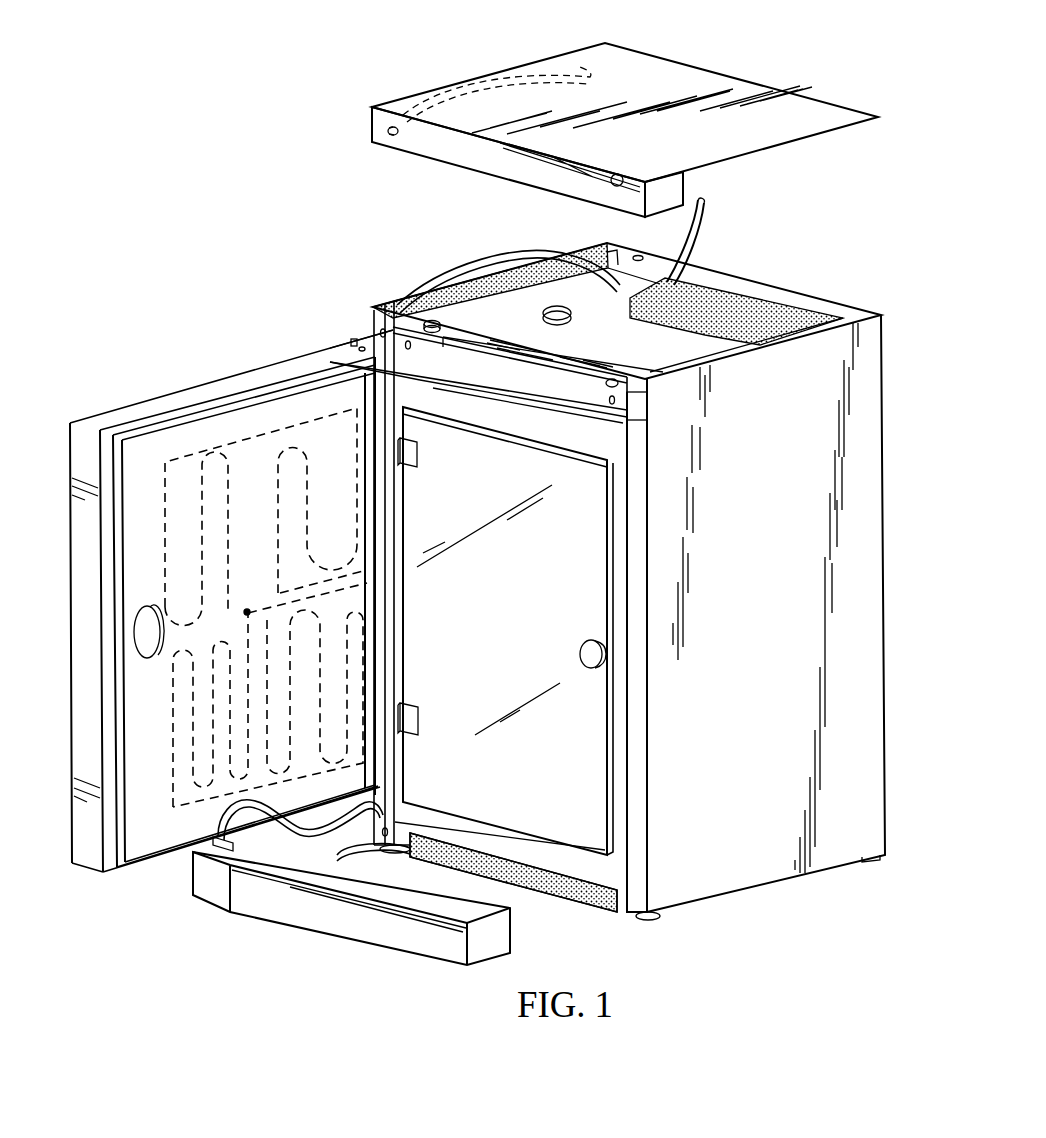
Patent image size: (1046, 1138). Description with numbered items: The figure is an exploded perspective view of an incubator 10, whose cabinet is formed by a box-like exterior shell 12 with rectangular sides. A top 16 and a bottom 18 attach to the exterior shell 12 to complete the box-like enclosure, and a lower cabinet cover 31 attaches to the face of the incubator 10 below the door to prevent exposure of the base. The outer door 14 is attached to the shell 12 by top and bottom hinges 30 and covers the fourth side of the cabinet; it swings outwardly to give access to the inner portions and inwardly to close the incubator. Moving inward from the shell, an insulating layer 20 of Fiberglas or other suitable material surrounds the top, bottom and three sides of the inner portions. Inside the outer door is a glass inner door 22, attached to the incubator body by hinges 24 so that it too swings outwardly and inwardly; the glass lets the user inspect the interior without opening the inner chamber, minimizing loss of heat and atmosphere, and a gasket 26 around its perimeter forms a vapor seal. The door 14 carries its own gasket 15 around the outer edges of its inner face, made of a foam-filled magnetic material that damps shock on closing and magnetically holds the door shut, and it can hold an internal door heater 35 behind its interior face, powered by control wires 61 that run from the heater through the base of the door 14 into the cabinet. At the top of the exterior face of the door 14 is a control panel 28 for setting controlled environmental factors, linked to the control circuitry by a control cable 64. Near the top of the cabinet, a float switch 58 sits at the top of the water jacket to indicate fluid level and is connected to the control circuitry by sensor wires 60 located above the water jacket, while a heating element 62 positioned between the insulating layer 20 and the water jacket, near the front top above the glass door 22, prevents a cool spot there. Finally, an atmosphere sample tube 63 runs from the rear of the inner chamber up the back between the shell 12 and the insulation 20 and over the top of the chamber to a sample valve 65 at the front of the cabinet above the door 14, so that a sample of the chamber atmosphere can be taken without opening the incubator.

The incubator 10 is at (312, 996).
The exterior shell 12 is at (885, 820).
The door 14 is at (83, 462).
The gasket 15 is at (143, 853).
The top 16 is at (802, 100).
The bottom 18 is at (522, 888).
The insulating layer 20 is at (560, 277).
The inner door 22 is at (587, 760).
The hinges 24 is at (417, 453).
The gasket 26 is at (613, 690).
The control panel 28 is at (287, 363).
The hinges 30 is at (352, 345).
The lower cabinet cover 31 is at (447, 962).
The internal door heater 35 is at (173, 703).
The float switch 58 is at (362, 347).
The sensor wires 60 is at (430, 322).
The control wires 61 is at (367, 823).
The heating element 62 is at (512, 340).
The atmosphere sample tube 63 is at (578, 66).
The control cable 64 is at (391, 306).
The sample valve 65 is at (373, 140).